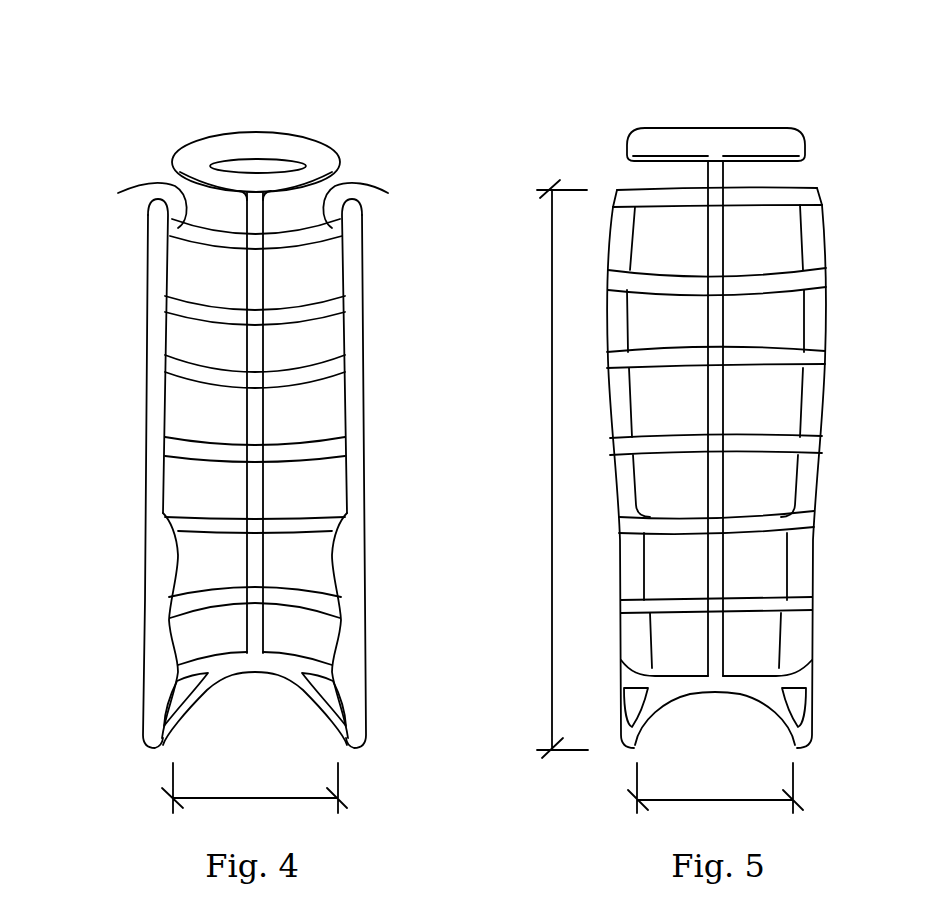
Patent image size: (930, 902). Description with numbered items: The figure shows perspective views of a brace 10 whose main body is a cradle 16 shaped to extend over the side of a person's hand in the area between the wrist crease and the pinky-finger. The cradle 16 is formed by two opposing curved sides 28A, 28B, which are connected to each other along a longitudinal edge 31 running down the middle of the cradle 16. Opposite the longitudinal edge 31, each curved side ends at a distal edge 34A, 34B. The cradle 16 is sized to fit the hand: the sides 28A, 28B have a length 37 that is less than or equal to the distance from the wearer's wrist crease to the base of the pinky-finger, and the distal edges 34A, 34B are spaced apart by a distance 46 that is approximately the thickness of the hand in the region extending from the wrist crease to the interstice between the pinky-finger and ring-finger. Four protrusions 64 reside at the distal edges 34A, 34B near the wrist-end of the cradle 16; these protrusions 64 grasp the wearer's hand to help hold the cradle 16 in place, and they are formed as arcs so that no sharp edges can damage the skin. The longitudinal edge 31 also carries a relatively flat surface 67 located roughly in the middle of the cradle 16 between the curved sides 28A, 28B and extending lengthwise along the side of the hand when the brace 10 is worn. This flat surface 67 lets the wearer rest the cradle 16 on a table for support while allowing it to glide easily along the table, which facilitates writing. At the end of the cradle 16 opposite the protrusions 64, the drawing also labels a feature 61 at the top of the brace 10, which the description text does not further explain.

In FIG. 4, the brace 10 is at (118, 346).
In FIG. 5, the brace 10 is at (847, 436).
In FIG. 4, the cradle 16 is at (395, 449).
In FIG. 4, the curved side 28A is at (388, 193).
In FIG. 5, the curved side 28A is at (638, 190).
In FIG. 4, the curved side 28B is at (118, 193).
In FIG. 5, the curved side 28B is at (790, 190).
In FIG. 5, the longitudinal edge 31 is at (727, 316).
In FIG. 4, the distal edge 34A is at (355, 327).
In FIG. 4, the distal edge 34B is at (160, 275).
In FIG. 5, the length 37 is at (551, 272).
In FIG. 4, the distance 46 is at (217, 797).
In FIG. 5, the distance 46 is at (678, 800).
In FIG. 4, the top cap 61 is at (176, 156).
In FIG. 5, the top cap 61 is at (793, 130).
In FIG. 4, the protrusions 64 is at (170, 565).
In FIG. 5, the protrusions 64 is at (645, 579).
In FIG. 5, the relatively flat surface 67 is at (723, 240).